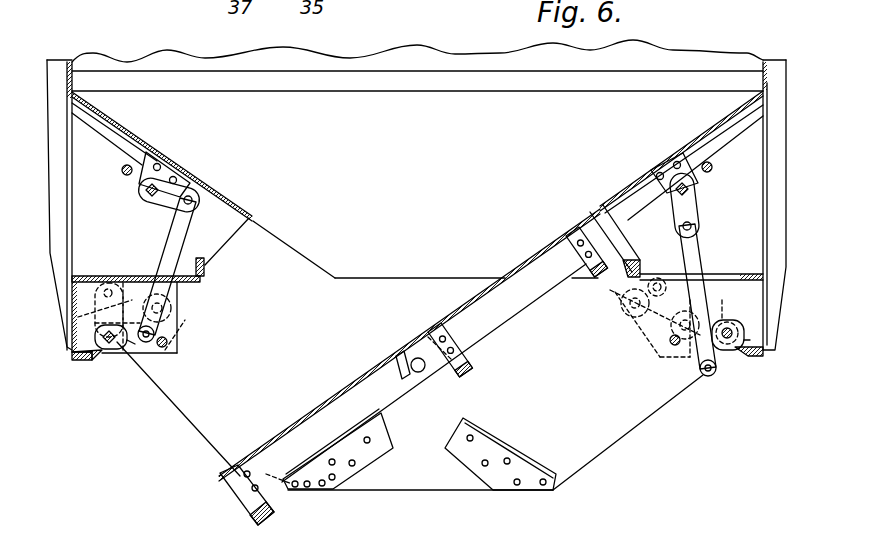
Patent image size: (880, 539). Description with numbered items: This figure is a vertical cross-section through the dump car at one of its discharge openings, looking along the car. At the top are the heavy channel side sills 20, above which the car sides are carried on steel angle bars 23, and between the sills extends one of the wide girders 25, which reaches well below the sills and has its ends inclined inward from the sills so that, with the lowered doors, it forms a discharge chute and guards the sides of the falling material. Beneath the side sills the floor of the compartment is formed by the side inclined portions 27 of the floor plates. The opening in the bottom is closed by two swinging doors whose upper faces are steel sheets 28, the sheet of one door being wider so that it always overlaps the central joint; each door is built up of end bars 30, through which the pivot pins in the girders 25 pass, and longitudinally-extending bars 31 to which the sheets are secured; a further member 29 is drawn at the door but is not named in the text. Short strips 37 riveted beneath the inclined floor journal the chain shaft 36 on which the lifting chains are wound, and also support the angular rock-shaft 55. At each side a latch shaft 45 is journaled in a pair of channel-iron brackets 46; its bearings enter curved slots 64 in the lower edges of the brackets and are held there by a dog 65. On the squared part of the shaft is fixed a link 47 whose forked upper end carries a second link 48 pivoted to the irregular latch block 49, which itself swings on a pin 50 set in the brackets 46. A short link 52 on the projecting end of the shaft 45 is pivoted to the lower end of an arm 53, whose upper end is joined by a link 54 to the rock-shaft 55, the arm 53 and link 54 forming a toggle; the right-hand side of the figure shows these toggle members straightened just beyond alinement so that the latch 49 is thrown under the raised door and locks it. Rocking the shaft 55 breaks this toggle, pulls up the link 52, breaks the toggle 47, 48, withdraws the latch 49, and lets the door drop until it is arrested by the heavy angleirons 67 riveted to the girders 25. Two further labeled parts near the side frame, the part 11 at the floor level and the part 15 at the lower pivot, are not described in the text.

The floor bar 11 is at (96, 267).
The pivot pin 15 is at (738, 333).
The side sills 20 is at (80, 360).
The steel angle bars 23 is at (61, 241).
The girders 25 is at (646, 408).
The side inclined portions of the floor 27 is at (698, 136).
The upper surface of door 28 is at (463, 320).
The pin 29 is at (417, 358).
The end bars 30 is at (509, 316).
The longitudinally-extending bars 31 is at (275, 515).
The shaft 36 is at (121, 172).
The short strips 37 is at (166, 170).
The shaft 45 is at (107, 345).
The brackets 46 is at (174, 347).
The link 47 is at (78, 317).
The link 48 is at (133, 300).
The latch block 49 is at (190, 326).
The pin 50 is at (657, 278).
The short link 52 is at (138, 348).
The arm 53 is at (172, 231).
The link 54 is at (162, 205).
The rock-shaft 55 is at (143, 199).
The curved slots 64 is at (113, 345).
The dog 65 is at (173, 354).
The angleirons 67 is at (373, 453).